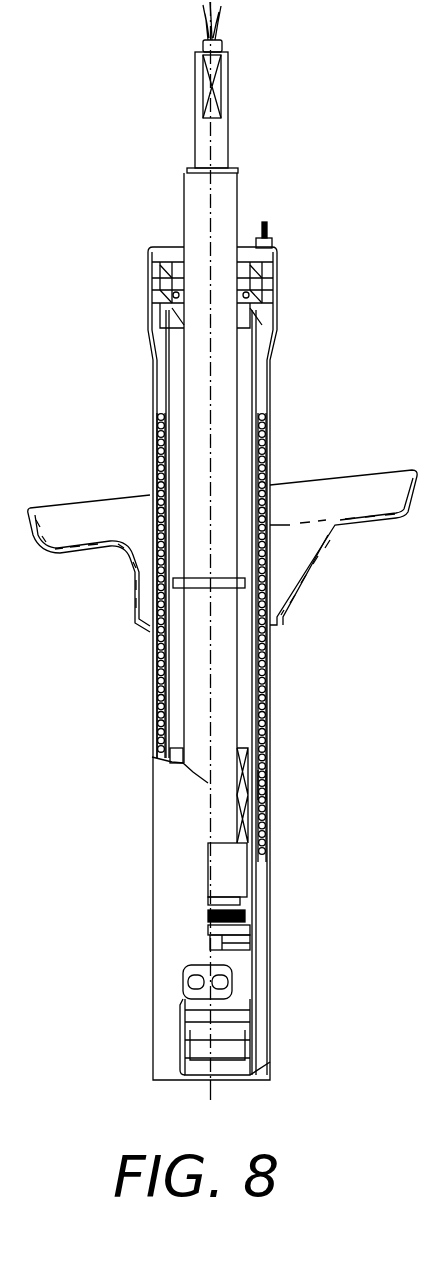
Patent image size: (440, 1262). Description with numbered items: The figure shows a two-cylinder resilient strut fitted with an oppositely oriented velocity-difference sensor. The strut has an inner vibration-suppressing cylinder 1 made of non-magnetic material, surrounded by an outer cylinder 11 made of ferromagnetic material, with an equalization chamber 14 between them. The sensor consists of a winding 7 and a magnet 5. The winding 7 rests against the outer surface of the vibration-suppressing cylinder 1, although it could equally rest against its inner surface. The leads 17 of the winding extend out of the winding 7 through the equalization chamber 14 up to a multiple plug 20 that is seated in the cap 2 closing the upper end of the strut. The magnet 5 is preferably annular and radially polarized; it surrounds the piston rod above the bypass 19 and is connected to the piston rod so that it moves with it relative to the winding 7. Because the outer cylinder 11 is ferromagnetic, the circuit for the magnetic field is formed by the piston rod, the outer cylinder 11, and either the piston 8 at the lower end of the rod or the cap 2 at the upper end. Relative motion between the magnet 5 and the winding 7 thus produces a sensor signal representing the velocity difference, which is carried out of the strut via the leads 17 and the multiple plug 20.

The vibration-suppressing cylinder 1 is at (265, 388).
The cap 2 is at (257, 290).
The magnet 5 is at (248, 812).
The winding 7 is at (272, 678).
The piston 8 is at (240, 945).
The outer cylinder 11 is at (271, 731).
The equalization chamber 14 is at (268, 786).
The leads 17 is at (265, 222).
The bypass 19 is at (218, 870).
The multiple plug 20 is at (270, 240).